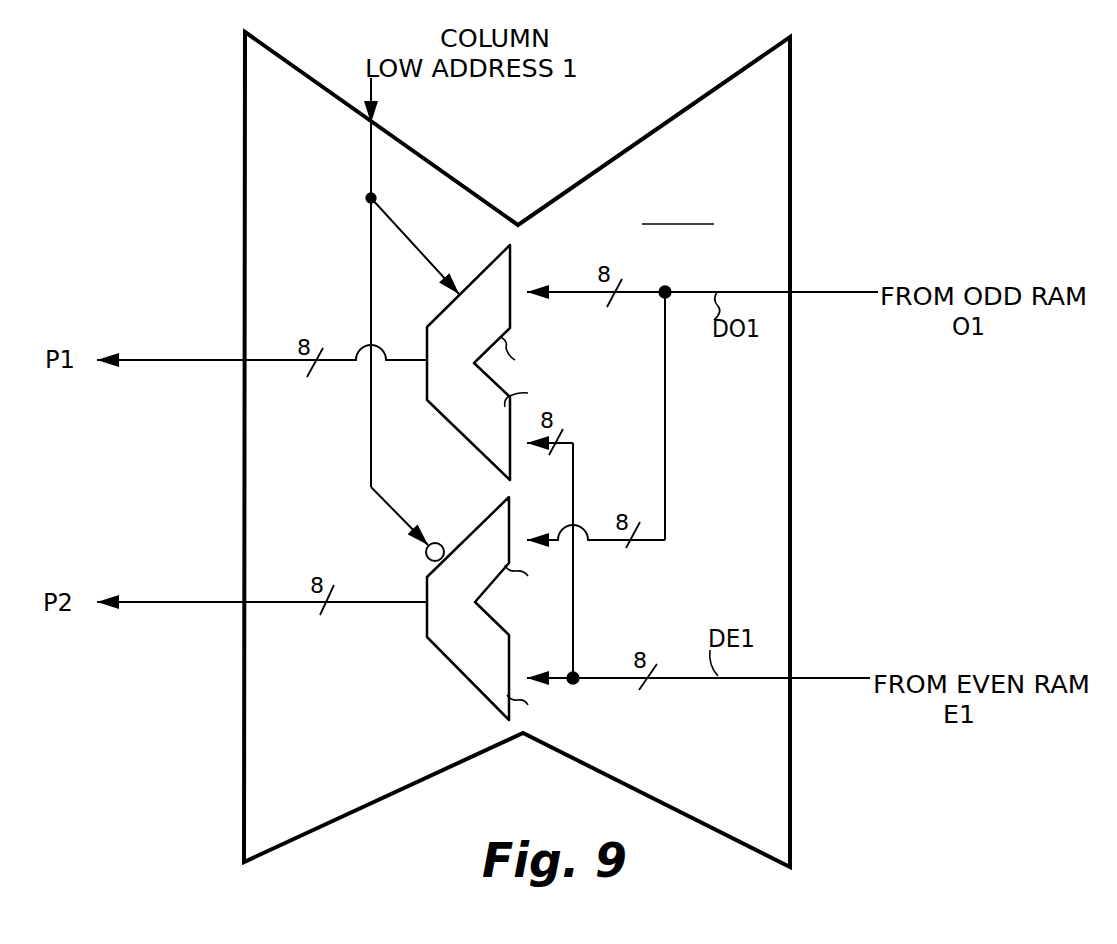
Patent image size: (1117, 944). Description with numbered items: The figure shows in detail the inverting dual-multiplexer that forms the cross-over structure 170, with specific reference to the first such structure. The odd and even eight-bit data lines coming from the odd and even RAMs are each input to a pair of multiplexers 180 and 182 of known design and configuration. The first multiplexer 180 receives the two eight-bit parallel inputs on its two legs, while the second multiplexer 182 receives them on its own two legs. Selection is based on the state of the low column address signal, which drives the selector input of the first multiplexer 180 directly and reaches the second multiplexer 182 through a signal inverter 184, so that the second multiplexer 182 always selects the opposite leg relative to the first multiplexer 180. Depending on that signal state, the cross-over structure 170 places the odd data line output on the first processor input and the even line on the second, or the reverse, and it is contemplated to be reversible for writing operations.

The cross-over structure 170 is at (806, 170).
The first multiplexer 180 is at (476, 291).
The second multiplexer 182 is at (447, 652).
The signal inverter 184 is at (436, 541).